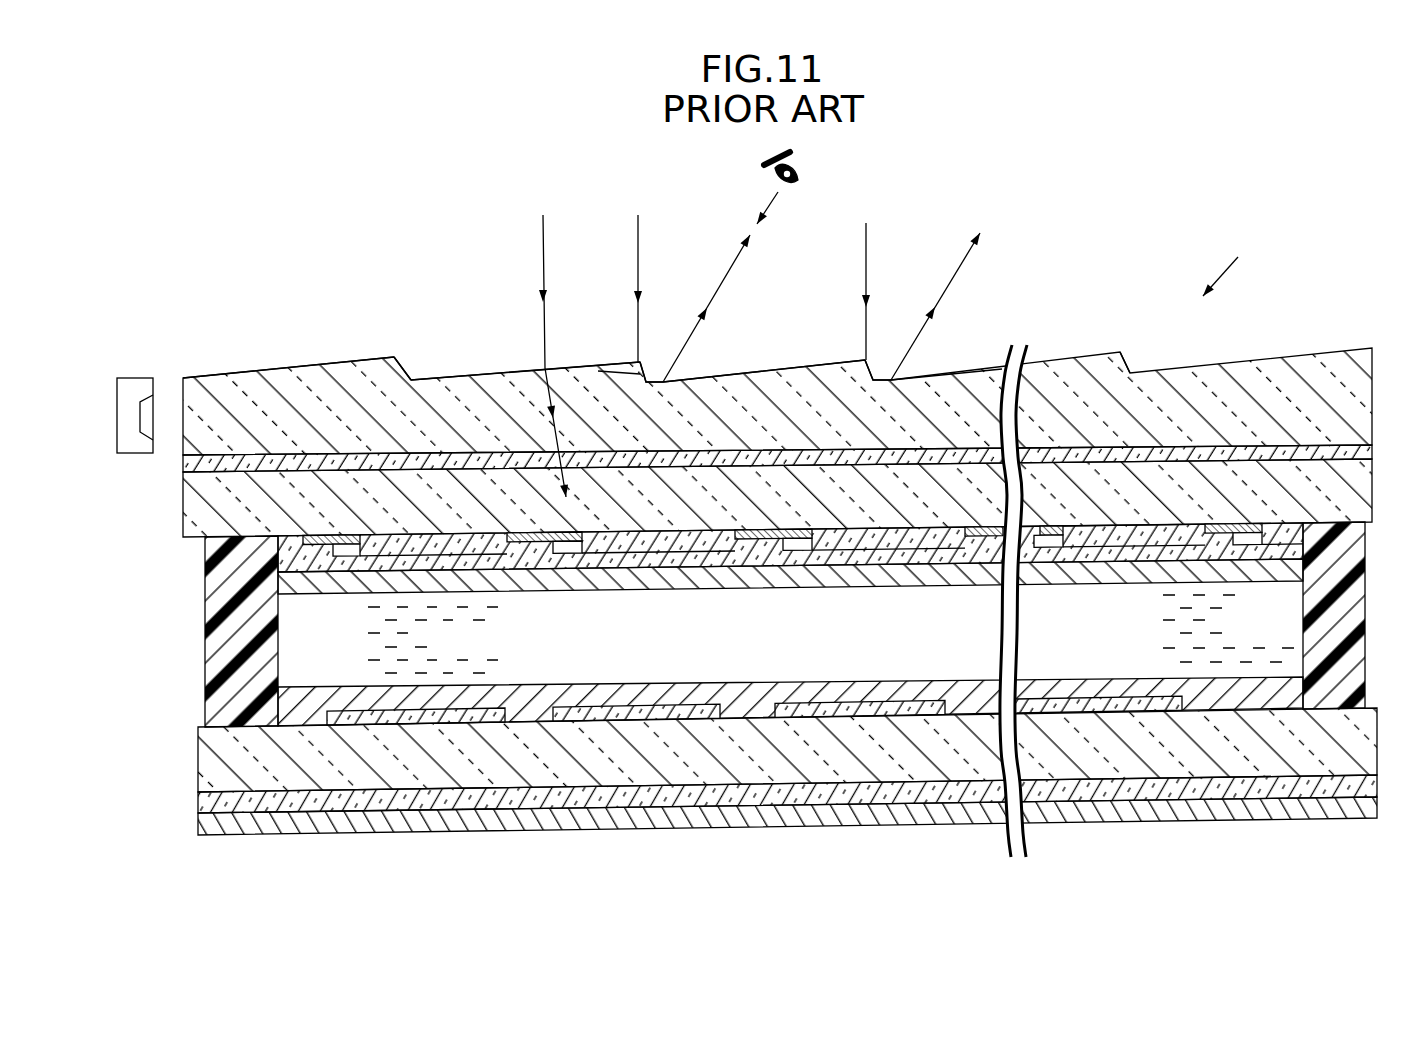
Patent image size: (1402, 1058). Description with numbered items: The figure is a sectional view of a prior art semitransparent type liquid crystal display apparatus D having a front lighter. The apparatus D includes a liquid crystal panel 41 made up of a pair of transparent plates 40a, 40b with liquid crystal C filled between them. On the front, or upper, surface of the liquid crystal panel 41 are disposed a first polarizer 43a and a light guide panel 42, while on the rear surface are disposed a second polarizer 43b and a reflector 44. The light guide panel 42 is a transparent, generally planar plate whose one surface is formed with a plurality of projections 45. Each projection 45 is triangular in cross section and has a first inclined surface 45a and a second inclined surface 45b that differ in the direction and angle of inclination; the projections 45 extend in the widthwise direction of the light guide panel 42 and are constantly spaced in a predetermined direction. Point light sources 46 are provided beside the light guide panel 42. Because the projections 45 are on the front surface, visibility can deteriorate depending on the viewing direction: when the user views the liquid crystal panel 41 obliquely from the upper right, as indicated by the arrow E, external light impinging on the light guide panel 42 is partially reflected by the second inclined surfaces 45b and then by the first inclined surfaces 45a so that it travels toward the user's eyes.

The light guide panel 42 is at (226, 388).
The first polarizer 43a is at (185, 463).
The transparent plate 40a is at (207, 503).
The transparent plate 40b is at (205, 762).
The second polarizer 43b is at (198, 800).
The reflector 44 is at (198, 822).
The liquid crystal panel 41 is at (185, 619).
The projection 45 is at (396, 357).
The first inclined surface 45a is at (315, 362).
The second inclined surface 45b is at (410, 379).
The point light source 46 is at (136, 377).
The liquid crystal C is at (300, 672).
The arrow E is at (758, 206).
The liquid crystal display apparatus D is at (1219, 260).